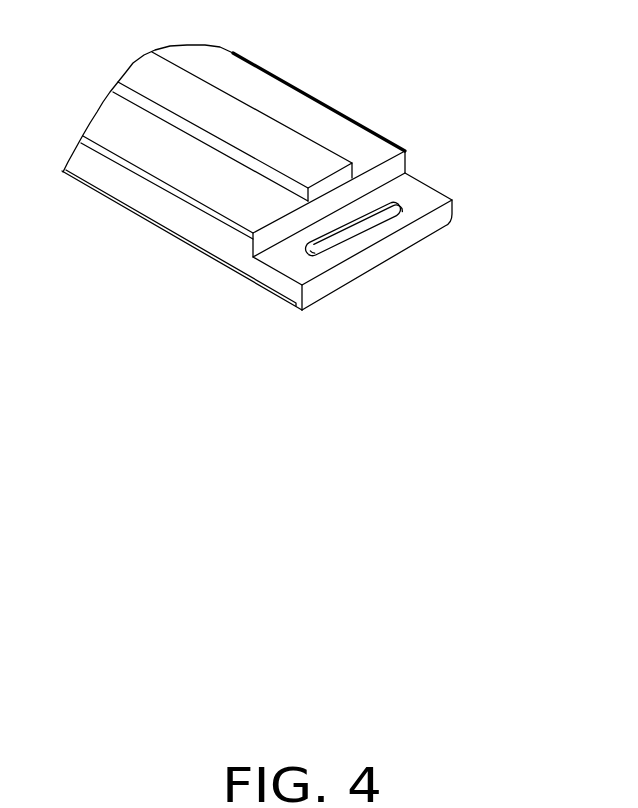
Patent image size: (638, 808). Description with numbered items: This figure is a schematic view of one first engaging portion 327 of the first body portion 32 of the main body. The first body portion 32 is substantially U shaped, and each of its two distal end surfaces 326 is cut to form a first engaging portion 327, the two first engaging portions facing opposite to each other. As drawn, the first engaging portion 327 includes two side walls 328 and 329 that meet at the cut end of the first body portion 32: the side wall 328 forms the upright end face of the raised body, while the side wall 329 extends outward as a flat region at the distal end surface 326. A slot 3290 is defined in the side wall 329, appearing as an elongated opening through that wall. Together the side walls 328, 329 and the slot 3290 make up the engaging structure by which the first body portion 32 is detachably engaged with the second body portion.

The first body portion 32 is at (147, 102).
The distal end surface 326 is at (362, 267).
The first engaging portion 327 is at (543, 100).
The side wall 328 is at (405, 152).
The side wall 329 is at (422, 200).
The slot 3290 is at (372, 225).